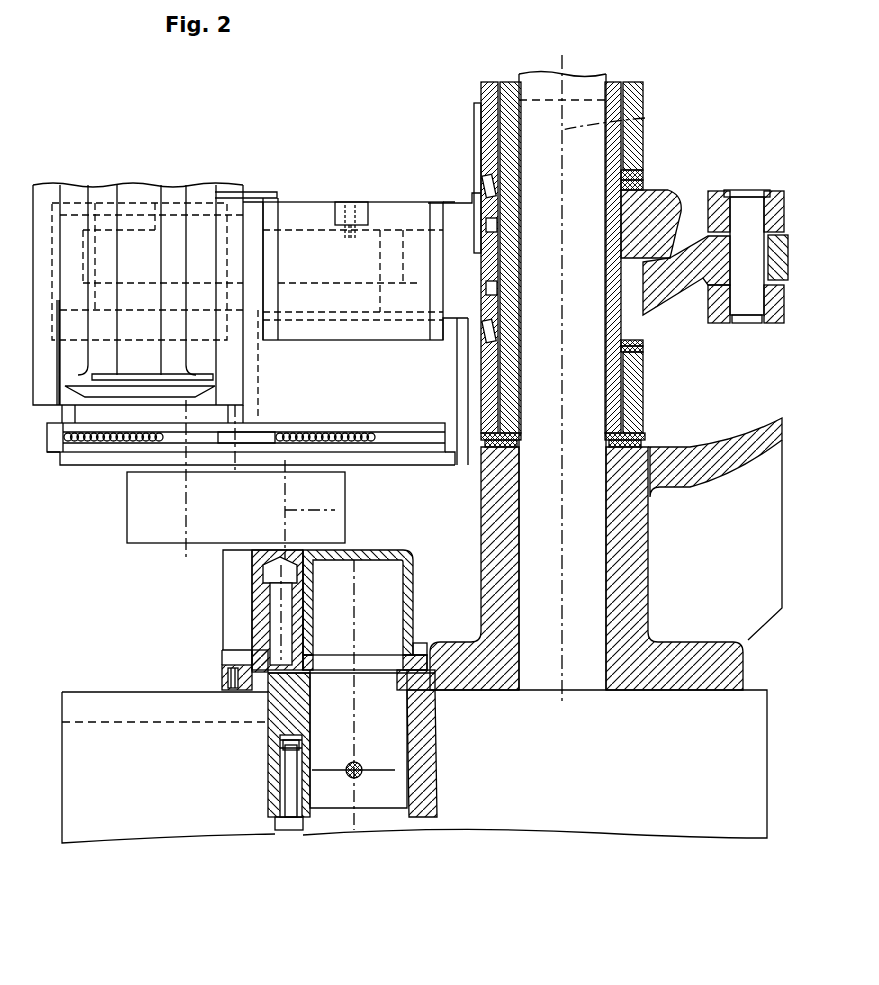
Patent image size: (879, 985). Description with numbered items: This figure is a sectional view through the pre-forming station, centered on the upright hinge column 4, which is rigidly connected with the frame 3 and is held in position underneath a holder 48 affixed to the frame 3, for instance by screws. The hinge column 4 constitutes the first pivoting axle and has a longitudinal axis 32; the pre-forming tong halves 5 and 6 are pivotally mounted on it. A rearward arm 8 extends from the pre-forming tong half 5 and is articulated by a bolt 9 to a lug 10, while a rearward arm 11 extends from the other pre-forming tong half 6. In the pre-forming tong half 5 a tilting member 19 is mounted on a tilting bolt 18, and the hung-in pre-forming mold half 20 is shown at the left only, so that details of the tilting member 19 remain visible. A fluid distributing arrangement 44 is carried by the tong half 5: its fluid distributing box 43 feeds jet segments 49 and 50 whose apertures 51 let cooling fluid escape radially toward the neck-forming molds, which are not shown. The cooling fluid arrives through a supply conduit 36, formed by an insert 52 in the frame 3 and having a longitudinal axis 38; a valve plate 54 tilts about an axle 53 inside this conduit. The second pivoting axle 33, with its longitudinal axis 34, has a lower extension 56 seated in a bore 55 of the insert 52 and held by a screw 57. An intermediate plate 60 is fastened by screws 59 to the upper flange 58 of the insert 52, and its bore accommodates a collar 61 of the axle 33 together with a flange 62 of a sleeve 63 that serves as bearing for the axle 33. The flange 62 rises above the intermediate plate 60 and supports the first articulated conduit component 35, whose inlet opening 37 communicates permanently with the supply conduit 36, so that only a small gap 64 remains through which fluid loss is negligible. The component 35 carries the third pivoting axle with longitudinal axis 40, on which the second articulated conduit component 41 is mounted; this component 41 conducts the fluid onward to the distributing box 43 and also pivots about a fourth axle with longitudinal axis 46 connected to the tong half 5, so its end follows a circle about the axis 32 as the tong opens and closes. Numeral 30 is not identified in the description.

The frame 3 is at (84, 690).
The hinge column 4 is at (580, 80).
The pre-forming tong half 5 is at (490, 88).
The pre-forming tong half 6 is at (480, 195).
The rearward arm 8 is at (686, 298).
The bolt 9 is at (752, 312).
The lug 10 is at (775, 200).
The rearward arm 11 is at (686, 215).
The tilting bolt 18 is at (268, 195).
The tilting member 19 is at (365, 342).
The pre-forming mold half 20 is at (105, 330).
The drive unit 30 is at (48, 410).
The longitudinal axis 32 is at (620, 121).
The second pivoting axle 33 is at (270, 618).
The longitudinal axis 34 is at (265, 598).
The first articulated conduit component 35 is at (222, 571).
The supply conduit 36 is at (405, 694).
The inlet opening 37 is at (405, 642).
The longitudinal axis 38 is at (420, 740).
The longitudinal axis 40 is at (346, 511).
The second articulated conduit component 41 is at (126, 520).
The fluid distributing box 43 is at (447, 468).
The fluid distributing arrangement 44 is at (55, 462).
The longitudinal axis 46 is at (180, 528).
The holder 48 is at (651, 520).
The jet segment 49 is at (100, 448).
The jet segment 50 is at (396, 455).
The apertures 51 is at (380, 430).
The insert 52 is at (266, 735).
The axle 53 is at (365, 762).
The valve plate 54 is at (385, 778).
The bore 55 is at (282, 796).
The lower extension 56 is at (290, 748).
The screw 57 is at (300, 828).
The upper flange 58 is at (230, 690).
The screws 59 is at (222, 648).
The intermediate plate 60 is at (222, 663).
The collar 61 is at (252, 700).
The flange 62 is at (345, 634).
The sleeve 63 is at (345, 612).
The gap 64 is at (362, 690).